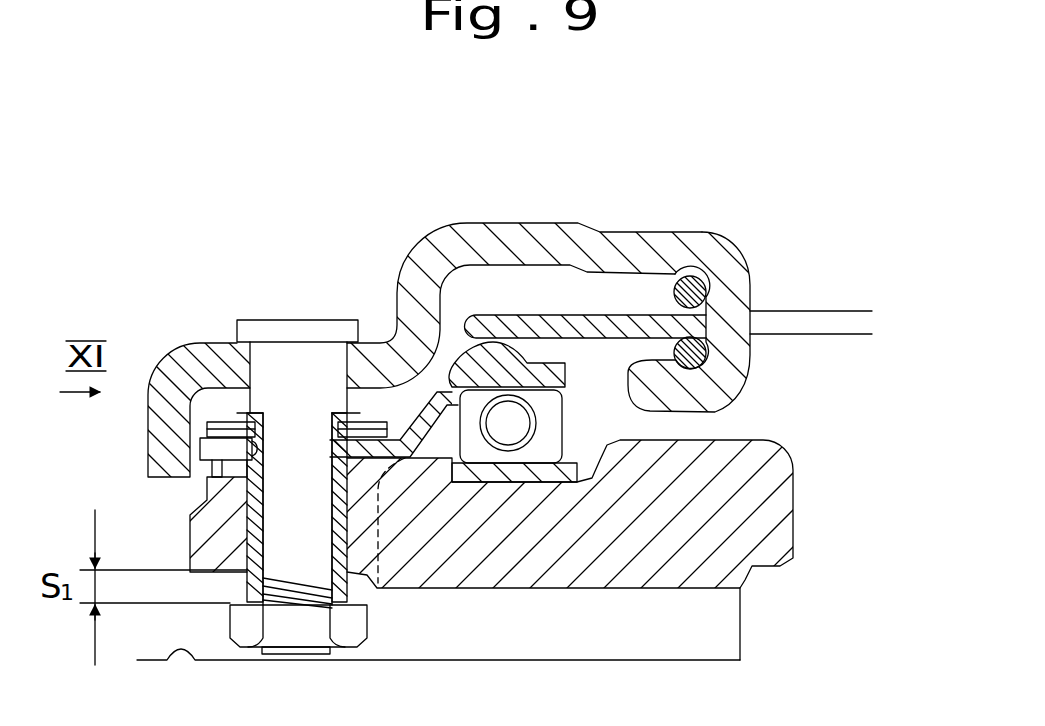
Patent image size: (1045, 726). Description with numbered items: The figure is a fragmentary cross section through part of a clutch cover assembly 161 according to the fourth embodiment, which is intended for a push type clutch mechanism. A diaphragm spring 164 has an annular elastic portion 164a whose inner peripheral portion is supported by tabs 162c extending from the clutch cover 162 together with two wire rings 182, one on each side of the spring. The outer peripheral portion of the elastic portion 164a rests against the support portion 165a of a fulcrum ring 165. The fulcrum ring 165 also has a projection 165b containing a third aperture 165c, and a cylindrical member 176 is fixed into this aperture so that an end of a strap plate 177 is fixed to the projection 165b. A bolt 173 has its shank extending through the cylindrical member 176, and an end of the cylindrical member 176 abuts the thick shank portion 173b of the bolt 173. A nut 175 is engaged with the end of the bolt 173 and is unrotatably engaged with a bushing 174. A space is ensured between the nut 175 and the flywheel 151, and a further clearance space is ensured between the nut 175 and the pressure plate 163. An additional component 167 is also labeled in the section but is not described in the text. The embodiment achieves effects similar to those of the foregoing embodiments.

The flywheel 151 is at (167, 660).
The clutch cover assembly 161 is at (273, 183).
The clutch cover 162 is at (475, 242).
The hook portion of bracket 162c is at (645, 290).
The pressure plate 163 is at (683, 495).
The diaphragm spring 164 is at (798, 272).
The annular elastic portion 164a is at (583, 323).
The fulcrum ring 165 is at (408, 402).
The support portion 165a is at (493, 353).
The projection 165b is at (240, 447).
The third aperture 165c is at (235, 465).
The L-shaped bracket 167 is at (116, 254).
The bolt 173 is at (254, 306).
The thick shank portion 173b is at (273, 393).
The bushing 174 is at (340, 547).
The nut 175 is at (283, 623).
The cylindrical member 176 is at (347, 437).
The strap plate 177 is at (233, 407).
The wire rings 182 is at (702, 286).